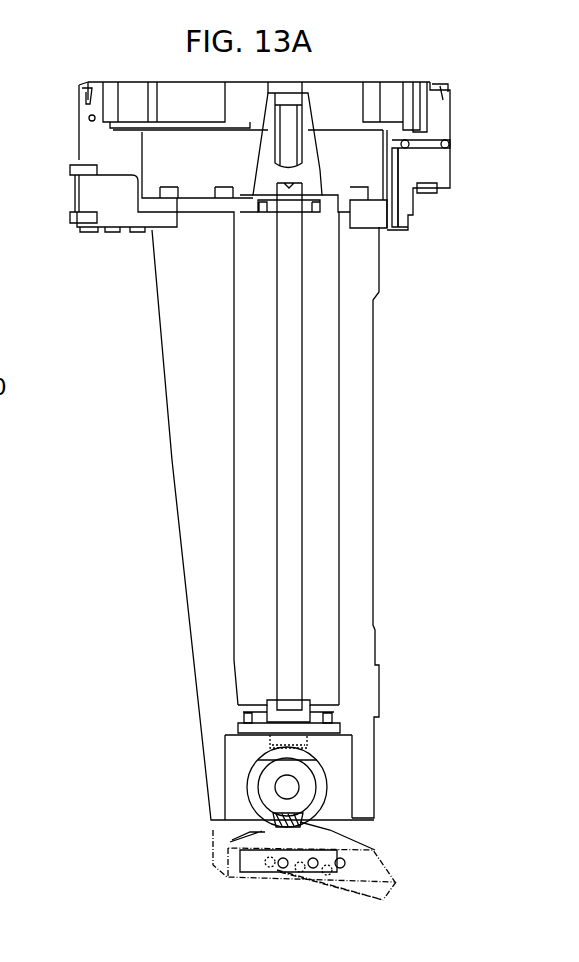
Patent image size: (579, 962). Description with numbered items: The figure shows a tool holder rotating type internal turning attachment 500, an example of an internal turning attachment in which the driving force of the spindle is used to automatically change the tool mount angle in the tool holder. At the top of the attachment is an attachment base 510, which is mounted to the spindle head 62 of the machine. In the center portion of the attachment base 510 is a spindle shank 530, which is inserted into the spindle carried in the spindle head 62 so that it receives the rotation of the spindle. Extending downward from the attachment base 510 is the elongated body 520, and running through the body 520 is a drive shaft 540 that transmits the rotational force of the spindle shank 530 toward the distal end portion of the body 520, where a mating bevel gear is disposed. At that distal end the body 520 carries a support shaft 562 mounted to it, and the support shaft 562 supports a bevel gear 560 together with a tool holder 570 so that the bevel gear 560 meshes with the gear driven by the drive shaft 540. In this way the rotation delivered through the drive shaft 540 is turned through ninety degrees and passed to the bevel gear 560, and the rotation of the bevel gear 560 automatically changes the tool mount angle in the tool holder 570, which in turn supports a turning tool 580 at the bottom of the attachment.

The spindle head 62 is at (80, 108).
The tool holder rotating type internal turning attachment 500 is at (484, 386).
The attachment base 510 is at (435, 165).
The body 520 is at (358, 345).
The spindle shank 530 is at (307, 176).
The drive shaft 540 is at (288, 410).
The bevel gear 560 is at (310, 823).
The support shaft 562 is at (292, 786).
The tool holder 570 is at (253, 818).
The turning tool 580 is at (373, 863).